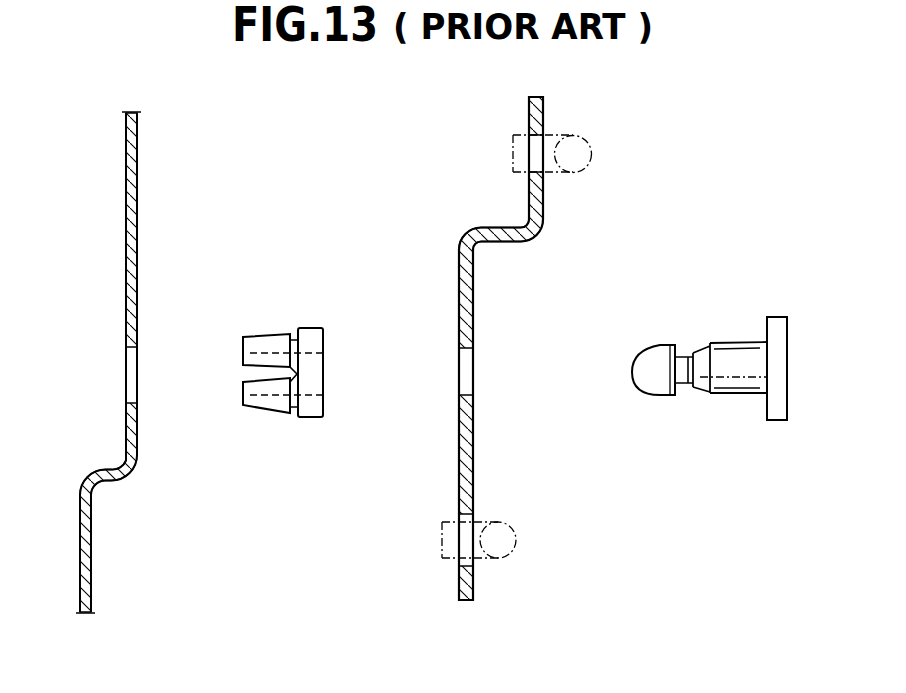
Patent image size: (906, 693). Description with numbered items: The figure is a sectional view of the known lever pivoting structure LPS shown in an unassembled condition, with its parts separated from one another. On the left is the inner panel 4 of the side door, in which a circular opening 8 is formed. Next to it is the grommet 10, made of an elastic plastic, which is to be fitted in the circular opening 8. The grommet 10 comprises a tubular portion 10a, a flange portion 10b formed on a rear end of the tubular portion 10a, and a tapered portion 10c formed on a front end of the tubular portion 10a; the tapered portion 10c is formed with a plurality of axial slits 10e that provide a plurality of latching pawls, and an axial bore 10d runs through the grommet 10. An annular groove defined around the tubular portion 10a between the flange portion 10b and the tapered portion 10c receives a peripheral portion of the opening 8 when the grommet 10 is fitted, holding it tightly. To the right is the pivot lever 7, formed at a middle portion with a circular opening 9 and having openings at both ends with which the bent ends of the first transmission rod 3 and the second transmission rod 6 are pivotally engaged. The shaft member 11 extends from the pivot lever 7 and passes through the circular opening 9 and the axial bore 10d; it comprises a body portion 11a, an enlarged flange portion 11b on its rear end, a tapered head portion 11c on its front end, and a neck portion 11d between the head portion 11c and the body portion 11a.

The first transmission rod 3 is at (510, 542).
The inner panel 4 is at (128, 243).
The second transmission rod 6 is at (578, 143).
The pivot lever 7 is at (537, 231).
The circular opening 8 is at (128, 353).
The circular opening 9 is at (473, 355).
The grommet 10 is at (295, 329).
The tubular portion 10a is at (293, 335).
The flange portion 10b is at (317, 328).
The tapered portion 10c is at (270, 336).
The axial bore 10d is at (312, 353).
The axial slits 10e is at (248, 377).
The shaft member 11 is at (695, 360).
The body portion 11a is at (733, 350).
The enlarged flange portion 11b is at (778, 413).
The tapered head portion 11c is at (650, 378).
The neck portion 11d is at (683, 388).
The lever pivoting structure LPS is at (587, 330).